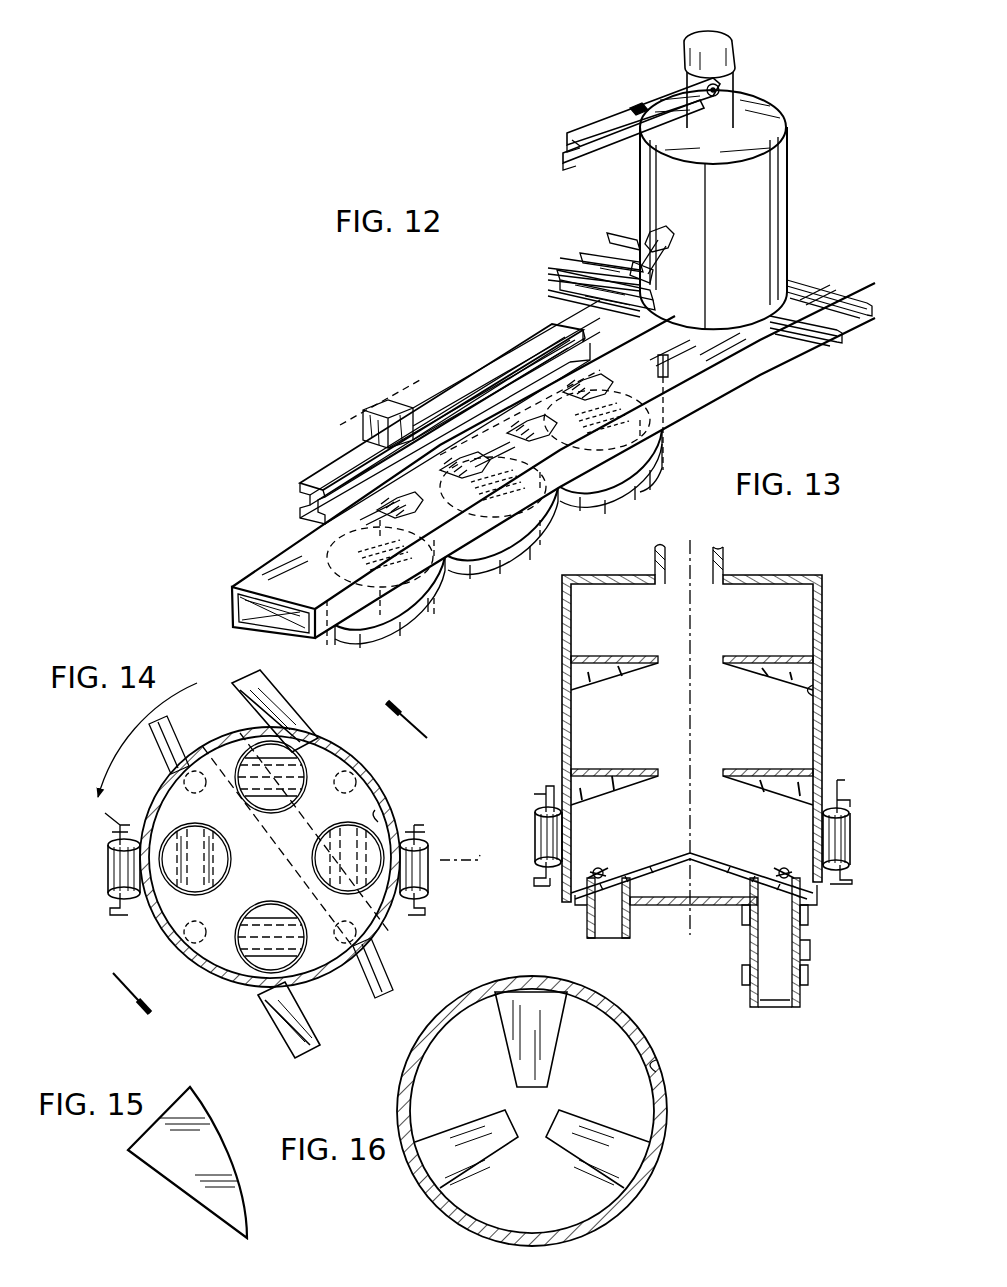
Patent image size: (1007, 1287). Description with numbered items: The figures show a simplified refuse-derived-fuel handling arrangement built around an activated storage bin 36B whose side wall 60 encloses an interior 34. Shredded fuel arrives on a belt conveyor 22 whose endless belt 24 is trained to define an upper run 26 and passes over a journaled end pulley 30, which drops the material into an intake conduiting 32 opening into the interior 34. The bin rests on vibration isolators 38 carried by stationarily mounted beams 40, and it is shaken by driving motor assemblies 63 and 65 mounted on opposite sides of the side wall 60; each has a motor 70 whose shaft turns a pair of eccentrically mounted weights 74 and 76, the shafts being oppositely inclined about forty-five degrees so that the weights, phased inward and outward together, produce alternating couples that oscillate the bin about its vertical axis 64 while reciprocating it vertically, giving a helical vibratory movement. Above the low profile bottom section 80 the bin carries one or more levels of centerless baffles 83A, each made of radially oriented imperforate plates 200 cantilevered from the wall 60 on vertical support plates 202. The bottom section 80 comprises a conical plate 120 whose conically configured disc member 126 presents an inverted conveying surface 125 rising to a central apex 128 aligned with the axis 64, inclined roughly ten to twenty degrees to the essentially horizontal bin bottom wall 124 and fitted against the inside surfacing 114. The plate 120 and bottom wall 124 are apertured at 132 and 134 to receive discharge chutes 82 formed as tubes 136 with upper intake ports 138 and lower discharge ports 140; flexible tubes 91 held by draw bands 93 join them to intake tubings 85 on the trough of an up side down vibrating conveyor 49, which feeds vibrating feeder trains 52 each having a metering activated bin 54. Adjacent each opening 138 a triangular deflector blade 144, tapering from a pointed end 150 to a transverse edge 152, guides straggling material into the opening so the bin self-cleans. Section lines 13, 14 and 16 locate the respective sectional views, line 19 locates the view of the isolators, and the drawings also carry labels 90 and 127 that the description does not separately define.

In FIG. 12, the belt conveyor 22 is at (573, 128).
In FIG. 12, the endless belt 24 is at (615, 115).
In FIG. 12, the upper run 26 is at (650, 98).
In FIG. 12, the end pulley 30 is at (722, 87).
In FIG. 12, the intake conduiting 32 is at (735, 58).
In FIG. 13, the intake conduiting 32 is at (726, 560).
In FIG. 13, the interior 34 is at (768, 580).
In FIG. 12, the activated bin 36B is at (790, 152).
In FIG. 13, the activated bin 36B is at (824, 708).
In FIG. 14, the activated bin 36B is at (350, 985).
In FIG. 16, the activated bin 36B is at (674, 1126).
In FIG. 14, the vibration isolators 38 is at (205, 775).
In FIG. 12, the stationarily mounted beams 40 is at (605, 238).
In FIG. 14, the stationarily mounted beams 40 is at (240, 690).
In FIG. 12, the up side down vibrating conveyor 49 is at (262, 543).
In FIG. 12, the vibrating feeder train 52 is at (318, 520).
In FIG. 12, the metering activated bin 54 is at (392, 610).
In FIG. 12, the bin side wall 60 is at (770, 212).
In FIG. 13, the bin side wall 60 is at (823, 730).
In FIG. 14, the bin side wall 60 is at (305, 748).
In FIG. 16, the bin side wall 60 is at (668, 1092).
In FIG. 12, the driving motor assembly 63 is at (672, 236).
In FIG. 13, the vertical axis 64 is at (690, 548).
In FIG. 14, the vertical axis 64 is at (268, 855).
In FIG. 14, the driving motor assembly 65 is at (432, 850).
In FIG. 13, the motor 70 is at (534, 840).
In FIG. 14, the motor 70 is at (266, 864).
In FIG. 13, the eccentrically mounted weight 74 is at (546, 878).
In FIG. 13, the eccentrically mounted weight 76 is at (550, 795).
In FIG. 12, the low profile bottom bulk material conveying section 80 is at (790, 284).
In FIG. 13, the discharge chute 82 is at (580, 926).
In FIG. 13, the centerless baffle 83A is at (553, 615).
In FIG. 16, the centerless baffle 83A is at (418, 1198).
In FIG. 13, the intake tubing 85 is at (778, 1010).
In FIG. 14, the tube opening 90 is at (290, 850).
In FIG. 13, the flexible tube 91 is at (810, 948).
In FIG. 13, the draw band 93 is at (806, 975).
In FIG. 13, the inside surfacing 114 is at (817, 688).
In FIG. 14, the inside surfacing 114 is at (380, 815).
In FIG. 16, the inside surfacing 114 is at (656, 1060).
In FIG. 13, the conical plate 120 is at (735, 855).
In FIG. 13, the bin bottom wall 124 is at (696, 905).
In FIG. 13, the conical material conveying surface 125 is at (650, 860).
In FIG. 13, the conically configured disc member 126 is at (750, 928).
In FIG. 13, the deflector underside 127 is at (690, 860).
In FIG. 13, the central apex 128 is at (705, 838).
In FIG. 13, the aperture 132 is at (758, 875).
In FIG. 14, the aperture 132 is at (378, 930).
In FIG. 13, the aperture 134 is at (630, 908).
In FIG. 13, the tube 136 is at (604, 940).
In FIG. 14, the tube 136 is at (395, 905).
In FIG. 13, the upper intake port 138 is at (616, 858).
In FIG. 14, the upper intake port 138 is at (186, 845).
In FIG. 13, the lower discharge port 140 is at (620, 935).
In FIG. 14, the lower discharge port 140 is at (356, 825).
In FIG. 14, the deflector blade 144 is at (278, 735).
In FIG. 13, the pointed end 150 is at (596, 866).
In FIG. 14, the transverse edge 152 is at (270, 975).
In FIG. 13, the plate 200 is at (612, 656).
In FIG. 16, the plate 200 is at (510, 1052).
In FIG. 13, the vertical support plate 202 is at (615, 680).
In FIG. 14, the section line 13— 13 is at (50, 832).
In FIG. 13, the section line 14— 14 is at (545, 790).
In FIG. 13, the section line 16— 16 is at (857, 650).
In FIG. 14, the section line 19— 19 is at (282, 867).